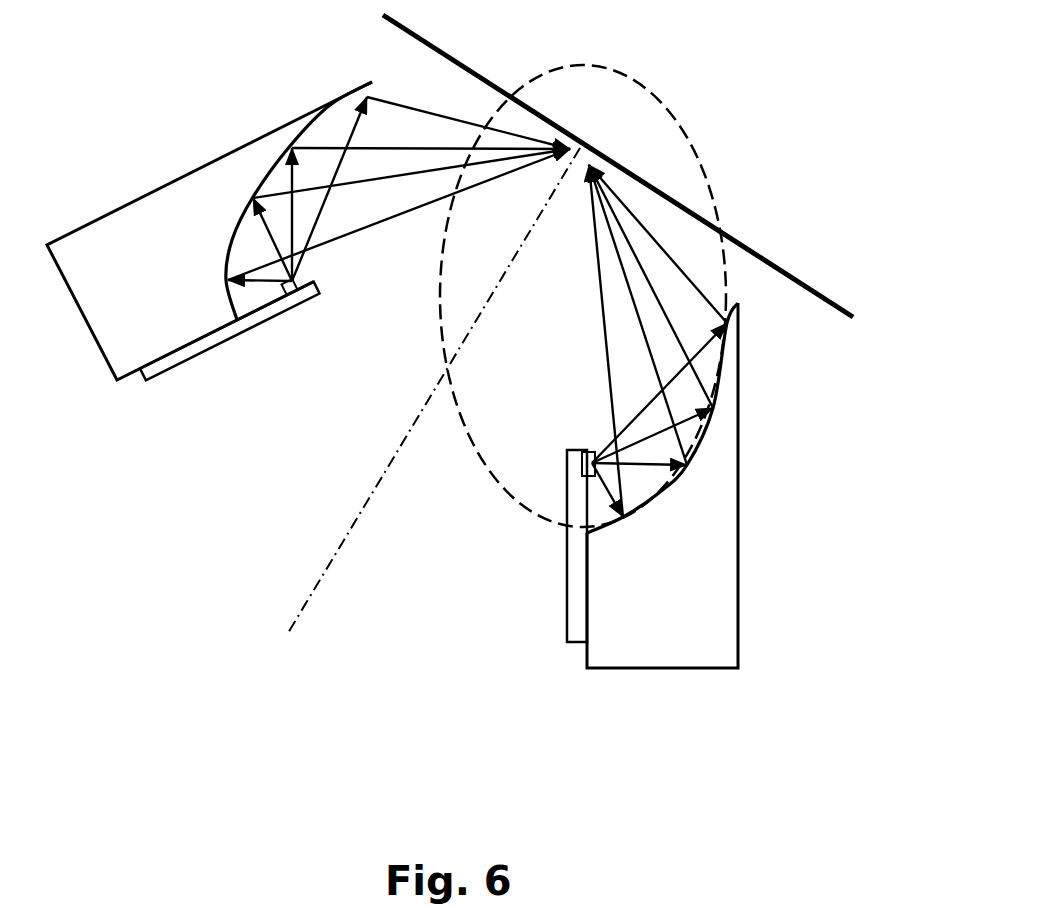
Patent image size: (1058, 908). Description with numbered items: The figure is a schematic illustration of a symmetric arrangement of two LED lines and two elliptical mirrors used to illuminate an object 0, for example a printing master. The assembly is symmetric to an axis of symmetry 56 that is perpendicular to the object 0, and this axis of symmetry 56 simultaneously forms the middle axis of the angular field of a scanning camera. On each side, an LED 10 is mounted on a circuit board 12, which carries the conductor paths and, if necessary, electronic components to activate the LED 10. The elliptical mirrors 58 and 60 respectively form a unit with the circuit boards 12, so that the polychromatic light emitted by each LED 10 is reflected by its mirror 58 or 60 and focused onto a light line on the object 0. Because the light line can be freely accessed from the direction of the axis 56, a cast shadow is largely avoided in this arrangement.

The object 0 is at (637, 175).
The LED 10 is at (305, 278).
The circuit board 12 is at (180, 360).
The axis of symmetry 56 is at (350, 533).
The elliptical mirror 58 is at (723, 440).
The elliptical mirror 60 is at (180, 190).